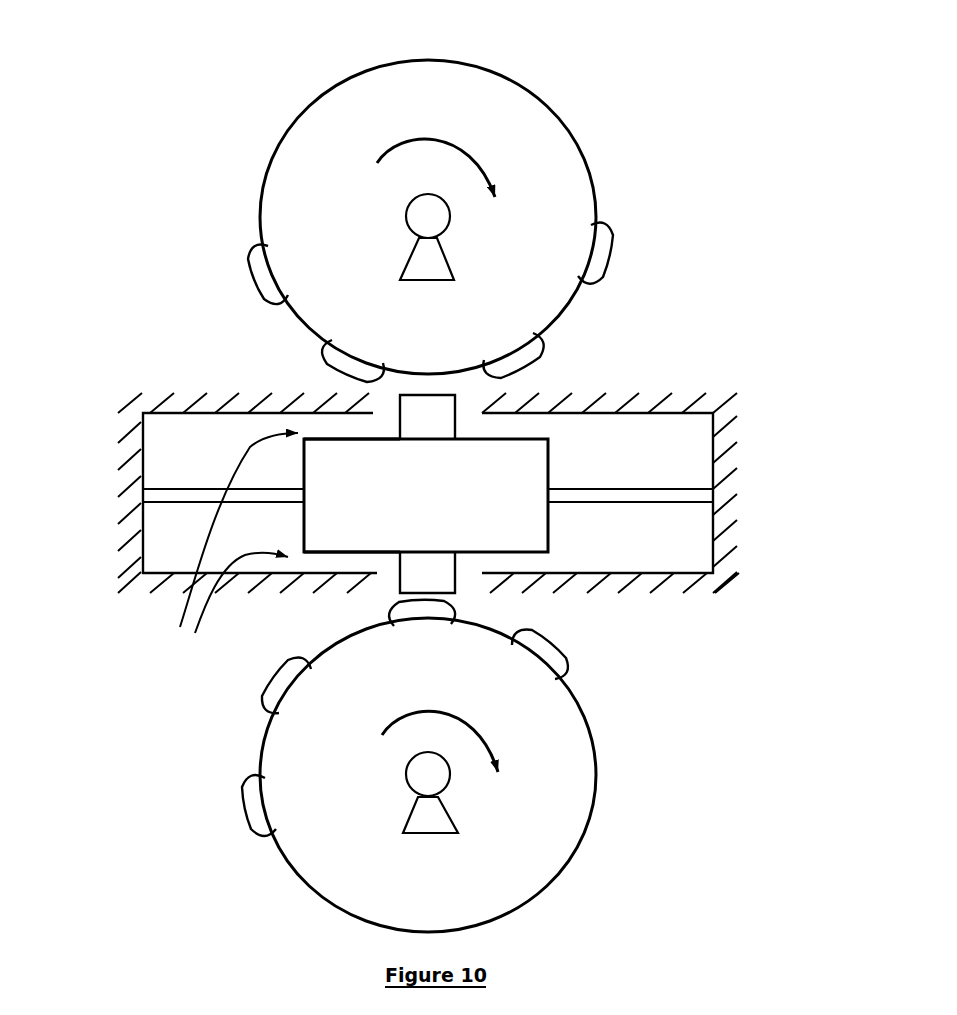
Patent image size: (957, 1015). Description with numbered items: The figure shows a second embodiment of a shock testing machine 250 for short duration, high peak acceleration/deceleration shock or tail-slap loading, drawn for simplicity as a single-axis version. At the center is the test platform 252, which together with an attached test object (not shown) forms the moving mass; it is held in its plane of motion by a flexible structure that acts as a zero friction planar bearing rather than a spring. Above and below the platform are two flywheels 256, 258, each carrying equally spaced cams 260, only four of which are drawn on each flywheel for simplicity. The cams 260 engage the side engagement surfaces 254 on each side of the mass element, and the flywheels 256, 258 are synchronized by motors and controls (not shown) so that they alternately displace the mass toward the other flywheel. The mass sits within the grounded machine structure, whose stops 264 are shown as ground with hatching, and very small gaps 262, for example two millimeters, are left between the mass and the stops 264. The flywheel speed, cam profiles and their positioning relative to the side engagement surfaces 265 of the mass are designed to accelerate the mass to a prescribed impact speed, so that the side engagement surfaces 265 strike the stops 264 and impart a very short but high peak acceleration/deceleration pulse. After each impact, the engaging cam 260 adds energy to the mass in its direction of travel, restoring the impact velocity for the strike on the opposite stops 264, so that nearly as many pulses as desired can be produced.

The shock testing machine 250 is at (157, 90).
The test platform 252 is at (553, 462).
The side engagement surfaces 254 is at (465, 395).
The flywheel 256 is at (363, 72).
The flywheel 258 is at (572, 813).
The cams 260 is at (612, 228).
The gaps 262 is at (220, 545).
The stops 264 is at (208, 410).
The side engagement surfaces 265 is at (345, 437).